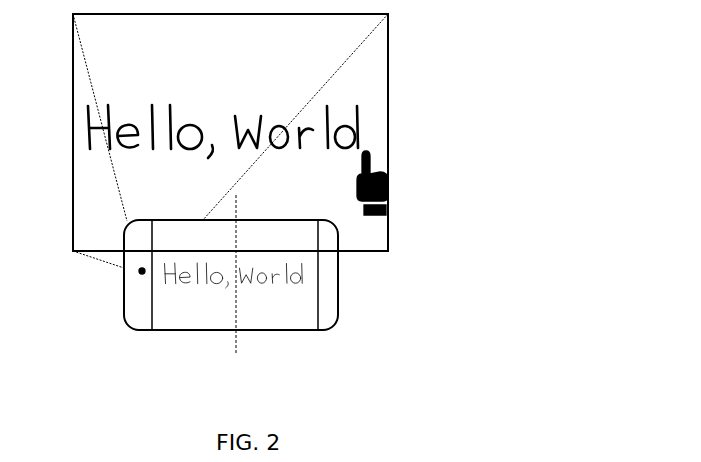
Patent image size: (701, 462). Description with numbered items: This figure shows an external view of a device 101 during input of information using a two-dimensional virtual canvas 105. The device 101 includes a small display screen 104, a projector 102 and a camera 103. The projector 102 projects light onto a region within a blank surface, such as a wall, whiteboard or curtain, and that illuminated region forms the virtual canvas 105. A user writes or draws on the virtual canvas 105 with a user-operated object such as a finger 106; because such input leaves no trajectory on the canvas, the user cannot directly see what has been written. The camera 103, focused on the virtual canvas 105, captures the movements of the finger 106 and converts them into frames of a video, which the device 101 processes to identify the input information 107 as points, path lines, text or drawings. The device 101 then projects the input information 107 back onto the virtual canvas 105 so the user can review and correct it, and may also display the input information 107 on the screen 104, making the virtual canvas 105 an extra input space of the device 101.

The device 101 is at (340, 305).
The projector 102 is at (139, 274).
The camera 103 is at (140, 271).
The display screen 104 is at (268, 318).
The virtual canvas 105 is at (388, 52).
The finger 106 is at (372, 150).
The input information 107 is at (364, 110).